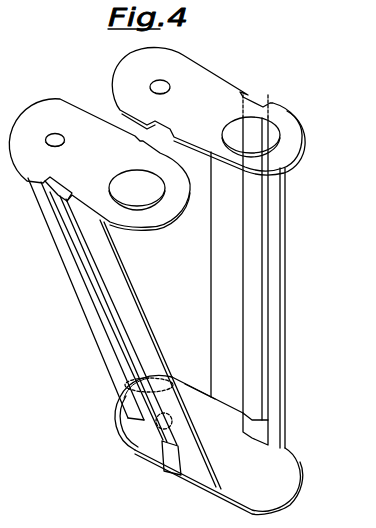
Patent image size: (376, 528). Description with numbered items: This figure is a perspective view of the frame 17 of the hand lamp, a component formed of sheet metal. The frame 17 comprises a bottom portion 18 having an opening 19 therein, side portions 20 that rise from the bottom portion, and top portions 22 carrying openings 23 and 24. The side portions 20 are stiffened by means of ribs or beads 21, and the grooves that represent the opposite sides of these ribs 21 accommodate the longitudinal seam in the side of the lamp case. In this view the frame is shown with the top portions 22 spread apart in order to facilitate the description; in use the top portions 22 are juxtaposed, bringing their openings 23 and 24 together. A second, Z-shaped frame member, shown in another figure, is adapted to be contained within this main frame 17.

The frame 17 is at (136, 455).
The bottom portion 18 is at (191, 405).
The opening 19 is at (114, 408).
The side portions 20 is at (74, 292).
The ribs or beads 21 is at (82, 239).
The top portions 22 is at (217, 76).
The opening 23 is at (158, 175).
The opening 24 is at (57, 134).